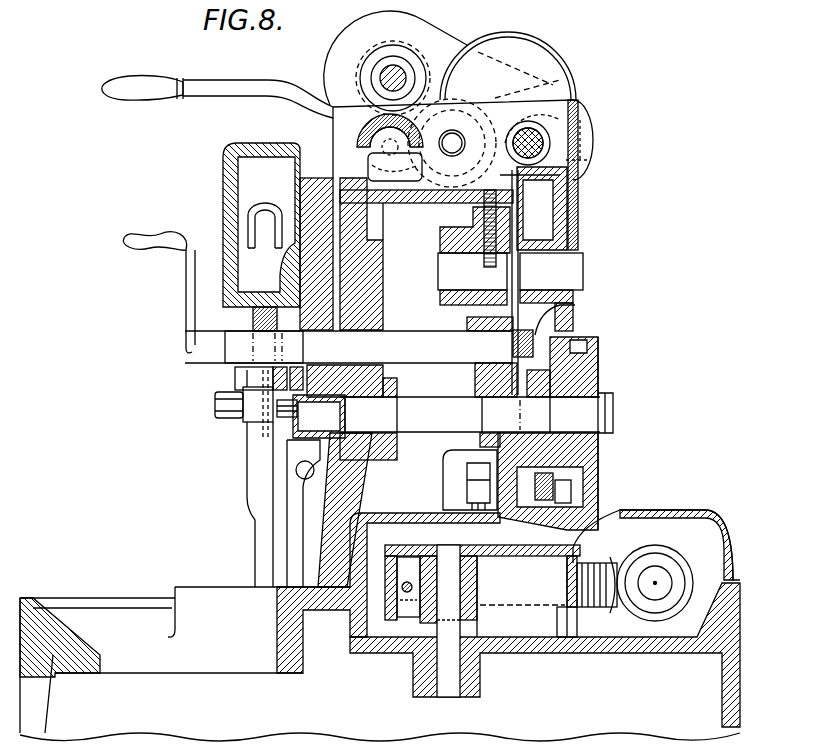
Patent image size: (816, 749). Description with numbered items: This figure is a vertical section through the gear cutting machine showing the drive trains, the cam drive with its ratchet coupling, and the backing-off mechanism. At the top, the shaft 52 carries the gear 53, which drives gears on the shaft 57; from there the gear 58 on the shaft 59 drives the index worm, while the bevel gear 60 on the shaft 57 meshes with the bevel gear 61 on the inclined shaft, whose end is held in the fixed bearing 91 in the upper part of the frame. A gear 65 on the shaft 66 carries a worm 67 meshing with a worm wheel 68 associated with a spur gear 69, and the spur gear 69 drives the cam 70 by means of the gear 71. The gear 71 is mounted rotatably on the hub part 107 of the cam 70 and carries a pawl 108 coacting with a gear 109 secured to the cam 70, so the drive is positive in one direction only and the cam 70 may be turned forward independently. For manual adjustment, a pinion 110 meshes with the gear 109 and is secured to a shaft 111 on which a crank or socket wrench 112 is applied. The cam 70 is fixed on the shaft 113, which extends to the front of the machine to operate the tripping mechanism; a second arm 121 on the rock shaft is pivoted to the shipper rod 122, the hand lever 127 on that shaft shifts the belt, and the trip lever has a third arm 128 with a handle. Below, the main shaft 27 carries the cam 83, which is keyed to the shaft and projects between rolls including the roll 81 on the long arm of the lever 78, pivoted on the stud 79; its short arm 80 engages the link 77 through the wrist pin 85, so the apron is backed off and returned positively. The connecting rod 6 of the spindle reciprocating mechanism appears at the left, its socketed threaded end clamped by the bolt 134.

The hand lever 127 is at (146, 86).
The gear 65 is at (580, 67).
The worm 67 is at (553, 138).
The spur gear 69 is at (577, 160).
The gear 58 is at (398, 66).
The shaft 59 is at (400, 68).
The shaft 52 is at (453, 140).
The gear 53 is at (524, 134).
The shaft 66 is at (545, 133).
The worm wheel 68 is at (528, 164).
The bevel gear 60 is at (365, 121).
The shaft 57 is at (363, 146).
The bevel gear 61 is at (372, 168).
The fixed bearing 91 is at (423, 205).
The pinion 110 is at (575, 317).
The crank or socket wrench 112 is at (185, 296).
The shaft 111 is at (449, 355).
The bolt 134 is at (224, 410).
The shaft 113 is at (436, 420).
The gear 109 is at (562, 337).
The hub part 107 is at (601, 373).
The gear 71 is at (599, 490).
The pawl 108 is at (545, 496).
The cam 70 is at (600, 517).
The second arm 121 is at (450, 485).
The shipper rod 122 is at (468, 467).
The connecting rod 6 is at (253, 470).
The third arm 128 is at (308, 480).
The short arm 80 is at (392, 556).
The wrist pin 85 is at (401, 588).
The link 77 is at (400, 607).
The stud 79 is at (443, 553).
The lever 78 is at (523, 577).
The cam 83 is at (628, 605).
The roll 81 is at (620, 528).
The main shaft 27 is at (661, 583).